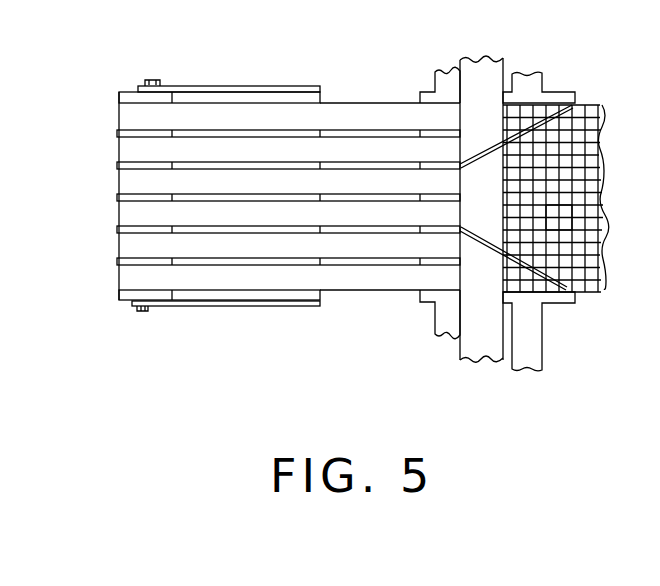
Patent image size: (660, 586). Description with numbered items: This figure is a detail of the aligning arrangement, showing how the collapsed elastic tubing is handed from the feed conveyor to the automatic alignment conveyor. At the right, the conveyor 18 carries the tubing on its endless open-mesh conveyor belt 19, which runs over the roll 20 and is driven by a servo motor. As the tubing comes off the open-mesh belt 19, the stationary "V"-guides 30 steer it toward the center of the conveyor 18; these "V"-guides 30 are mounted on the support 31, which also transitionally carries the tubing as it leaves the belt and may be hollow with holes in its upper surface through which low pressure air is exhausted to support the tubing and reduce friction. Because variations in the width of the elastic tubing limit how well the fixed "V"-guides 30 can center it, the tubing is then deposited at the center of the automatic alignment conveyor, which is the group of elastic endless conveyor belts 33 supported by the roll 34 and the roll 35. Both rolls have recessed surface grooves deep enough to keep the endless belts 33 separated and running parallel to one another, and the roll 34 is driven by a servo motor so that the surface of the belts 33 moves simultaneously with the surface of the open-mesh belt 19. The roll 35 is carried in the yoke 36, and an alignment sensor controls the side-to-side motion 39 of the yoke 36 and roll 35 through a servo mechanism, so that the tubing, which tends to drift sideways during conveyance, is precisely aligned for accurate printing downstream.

The conveyor 18 is at (608, 158).
The endless open-mesh conveyor belt 19 is at (595, 219).
The roll 20 is at (523, 75).
The "V"-guides 30 is at (555, 107).
The support 31 is at (487, 62).
The elastic endless conveyor belts 33 is at (364, 103).
The roll 34 is at (436, 78).
The roll 35 is at (118, 97).
The yoke 36 is at (226, 86).
The side-to-side motion 39 is at (258, 197).